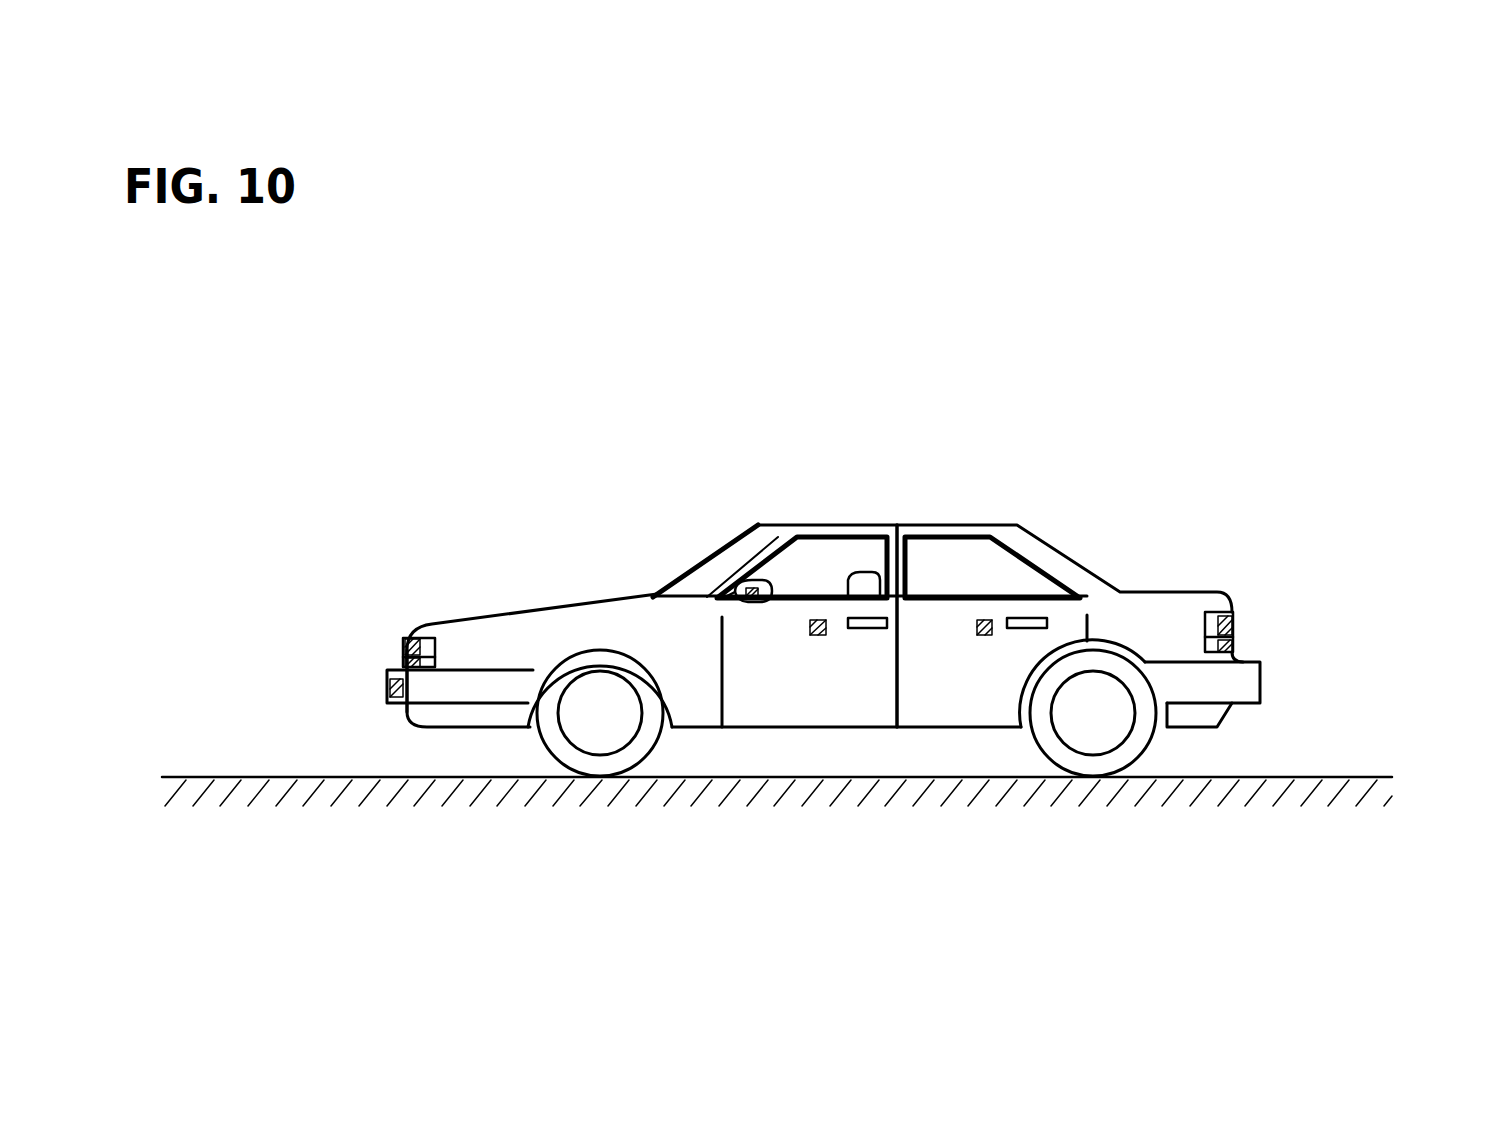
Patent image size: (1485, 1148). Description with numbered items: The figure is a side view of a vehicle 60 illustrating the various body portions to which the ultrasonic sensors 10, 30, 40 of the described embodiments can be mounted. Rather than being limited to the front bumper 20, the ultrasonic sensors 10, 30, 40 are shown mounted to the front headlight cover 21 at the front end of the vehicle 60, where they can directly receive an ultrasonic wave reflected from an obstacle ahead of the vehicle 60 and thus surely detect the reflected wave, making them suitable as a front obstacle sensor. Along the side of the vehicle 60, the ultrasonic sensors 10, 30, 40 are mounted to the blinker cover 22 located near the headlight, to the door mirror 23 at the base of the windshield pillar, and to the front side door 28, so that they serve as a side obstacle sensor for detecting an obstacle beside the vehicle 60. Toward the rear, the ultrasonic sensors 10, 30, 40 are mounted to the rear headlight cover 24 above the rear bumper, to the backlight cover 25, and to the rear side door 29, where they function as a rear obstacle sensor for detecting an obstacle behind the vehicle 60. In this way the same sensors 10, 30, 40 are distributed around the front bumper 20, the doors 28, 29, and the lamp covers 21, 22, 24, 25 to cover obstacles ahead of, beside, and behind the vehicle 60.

The ultrasonic sensor 10 is at (814, 575).
The ultrasonic sensor 30 is at (814, 575).
The ultrasonic sensor 40 is at (388, 687).
The front bumper 20 is at (477, 695).
The front headlight cover 21 is at (412, 640).
The blinker cover 22 is at (424, 688).
The door mirror 23 is at (753, 578).
The rear headlight cover 24 is at (1222, 610).
The backlight cover 25 is at (1260, 666).
The front side door 28 is at (818, 690).
The rear side door 29 is at (953, 690).
The vehicle 60 is at (918, 493).